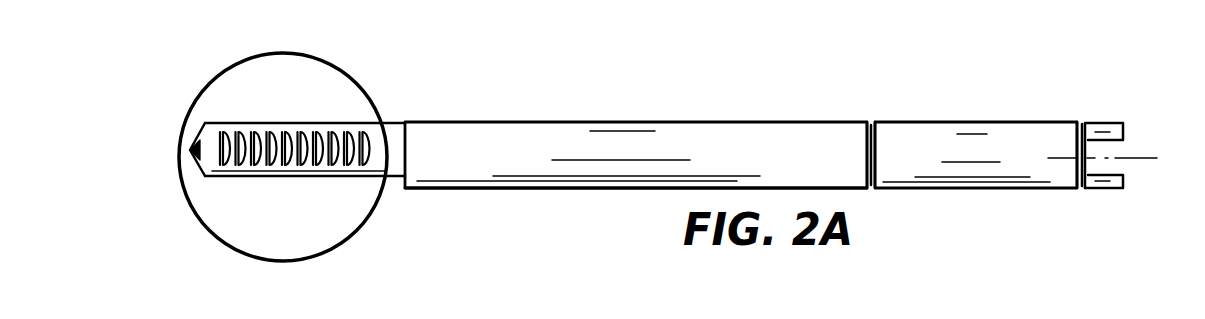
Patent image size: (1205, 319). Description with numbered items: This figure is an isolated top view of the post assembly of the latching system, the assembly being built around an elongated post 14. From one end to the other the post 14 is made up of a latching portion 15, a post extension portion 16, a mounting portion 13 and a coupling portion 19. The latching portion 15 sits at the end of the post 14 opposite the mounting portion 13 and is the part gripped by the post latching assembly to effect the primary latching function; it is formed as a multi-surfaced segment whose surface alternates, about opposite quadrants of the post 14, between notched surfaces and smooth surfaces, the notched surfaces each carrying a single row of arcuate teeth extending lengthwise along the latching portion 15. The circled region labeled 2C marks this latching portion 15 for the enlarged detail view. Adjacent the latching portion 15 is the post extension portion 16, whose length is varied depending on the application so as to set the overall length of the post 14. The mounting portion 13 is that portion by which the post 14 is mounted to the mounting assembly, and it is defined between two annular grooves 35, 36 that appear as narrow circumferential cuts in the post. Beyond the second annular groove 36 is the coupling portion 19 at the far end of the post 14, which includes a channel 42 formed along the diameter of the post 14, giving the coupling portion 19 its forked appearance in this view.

The detail circle for FIG. 2C is at (368, 93).
The latching portion 15 is at (285, 177).
The elongated post 14 is at (736, 86).
The post extension portion 16 is at (577, 172).
The annular groove 35 is at (879, 114).
The mounting portion 13 is at (948, 173).
The annular groove 36 is at (1075, 120).
The coupling portion 19 is at (1108, 122).
The channel 42 is at (1113, 168).